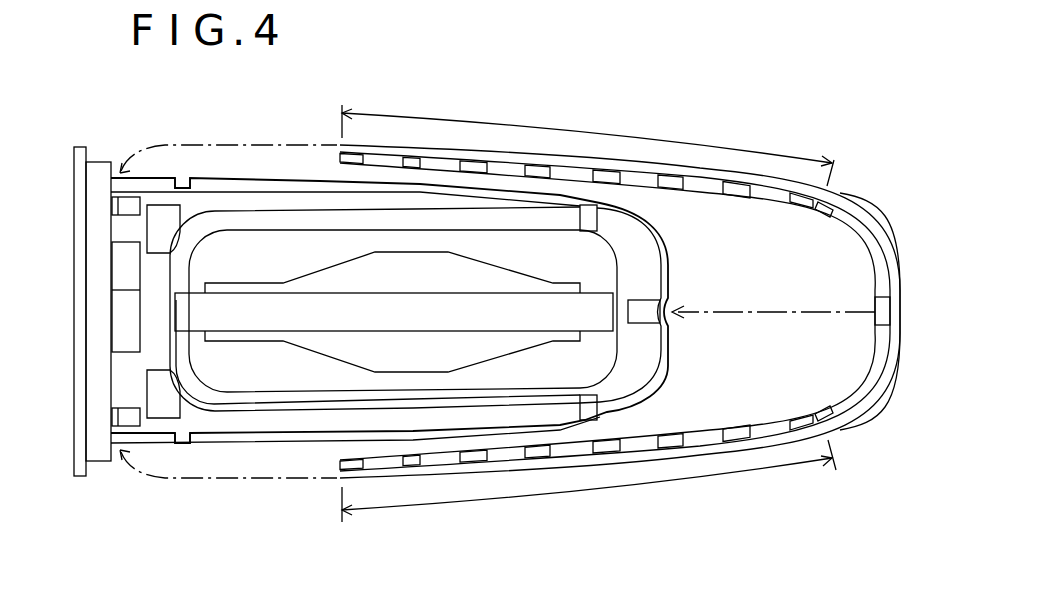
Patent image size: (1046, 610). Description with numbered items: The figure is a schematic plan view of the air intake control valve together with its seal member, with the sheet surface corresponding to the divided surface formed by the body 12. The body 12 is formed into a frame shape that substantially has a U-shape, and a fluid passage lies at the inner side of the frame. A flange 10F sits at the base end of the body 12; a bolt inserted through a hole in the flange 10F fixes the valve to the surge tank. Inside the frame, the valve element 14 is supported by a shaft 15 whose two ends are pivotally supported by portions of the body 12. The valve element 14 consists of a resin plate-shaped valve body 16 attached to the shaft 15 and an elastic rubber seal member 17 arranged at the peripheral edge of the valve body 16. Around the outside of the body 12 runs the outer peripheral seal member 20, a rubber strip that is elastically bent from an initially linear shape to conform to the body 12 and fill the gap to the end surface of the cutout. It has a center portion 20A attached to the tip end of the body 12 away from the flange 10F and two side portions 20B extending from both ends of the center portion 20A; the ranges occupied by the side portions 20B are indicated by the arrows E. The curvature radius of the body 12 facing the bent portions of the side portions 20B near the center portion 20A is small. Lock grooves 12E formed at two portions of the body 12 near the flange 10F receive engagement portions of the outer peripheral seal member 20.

The flange 10F is at (83, 147).
The body 12 is at (645, 267).
The lock grooves 12E is at (183, 178).
The valve element 14 is at (332, 250).
The shaft 15 is at (193, 300).
The valve body 16 is at (232, 375).
The elastic seal member 17 is at (292, 397).
The outer peripheral seal member 20 is at (713, 168).
The center portion 20A is at (883, 383).
The side portions 20B is at (510, 158).
The arrows E is at (589, 313).